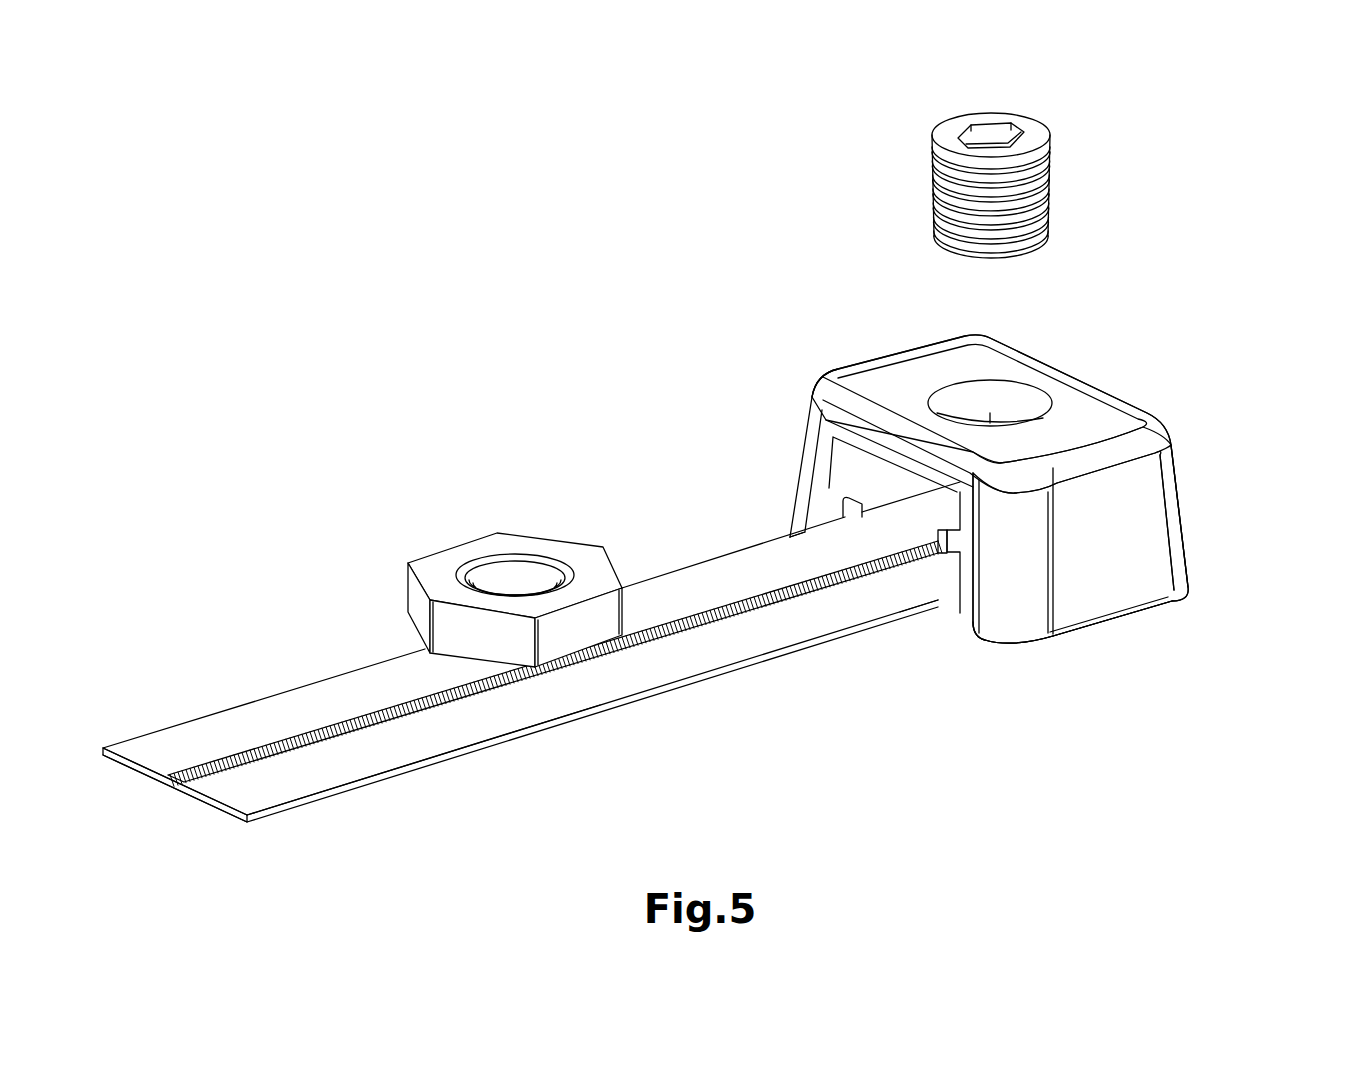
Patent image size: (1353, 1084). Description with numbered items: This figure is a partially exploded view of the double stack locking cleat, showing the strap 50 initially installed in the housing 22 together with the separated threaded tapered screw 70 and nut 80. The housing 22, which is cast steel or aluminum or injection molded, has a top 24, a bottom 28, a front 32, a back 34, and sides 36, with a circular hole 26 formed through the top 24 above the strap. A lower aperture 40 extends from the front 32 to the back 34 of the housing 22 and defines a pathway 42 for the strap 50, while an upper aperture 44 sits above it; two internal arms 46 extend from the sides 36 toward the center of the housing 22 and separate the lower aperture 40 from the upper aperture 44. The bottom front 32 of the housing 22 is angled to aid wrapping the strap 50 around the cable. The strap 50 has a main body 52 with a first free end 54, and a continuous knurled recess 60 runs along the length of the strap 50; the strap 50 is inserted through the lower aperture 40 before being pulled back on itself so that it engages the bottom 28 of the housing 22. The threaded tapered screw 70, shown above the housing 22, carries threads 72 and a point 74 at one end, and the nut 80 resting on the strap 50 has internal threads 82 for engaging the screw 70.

The housing 22 is at (961, 512).
The top 24 is at (1088, 408).
The circular hole 26 is at (1000, 395).
The bottom 28 is at (1078, 640).
The front 32 is at (978, 640).
The back 34 is at (1195, 548).
The sides 36 is at (828, 368).
The lower aperture 40 is at (531, 684).
The pathway 42 is at (922, 577).
The upper aperture 44 is at (850, 462).
The internal arms 46 is at (800, 528).
The strap 50 is at (480, 727).
The main body 52 is at (600, 683).
The first free end 54 is at (297, 777).
The continuous knurled recess 60 is at (287, 737).
The threaded tapered screw 70 is at (1047, 176).
The threads 72 is at (1050, 185).
The point 74 is at (962, 244).
The nut 80 is at (470, 554).
The internal threads 82 is at (498, 562).